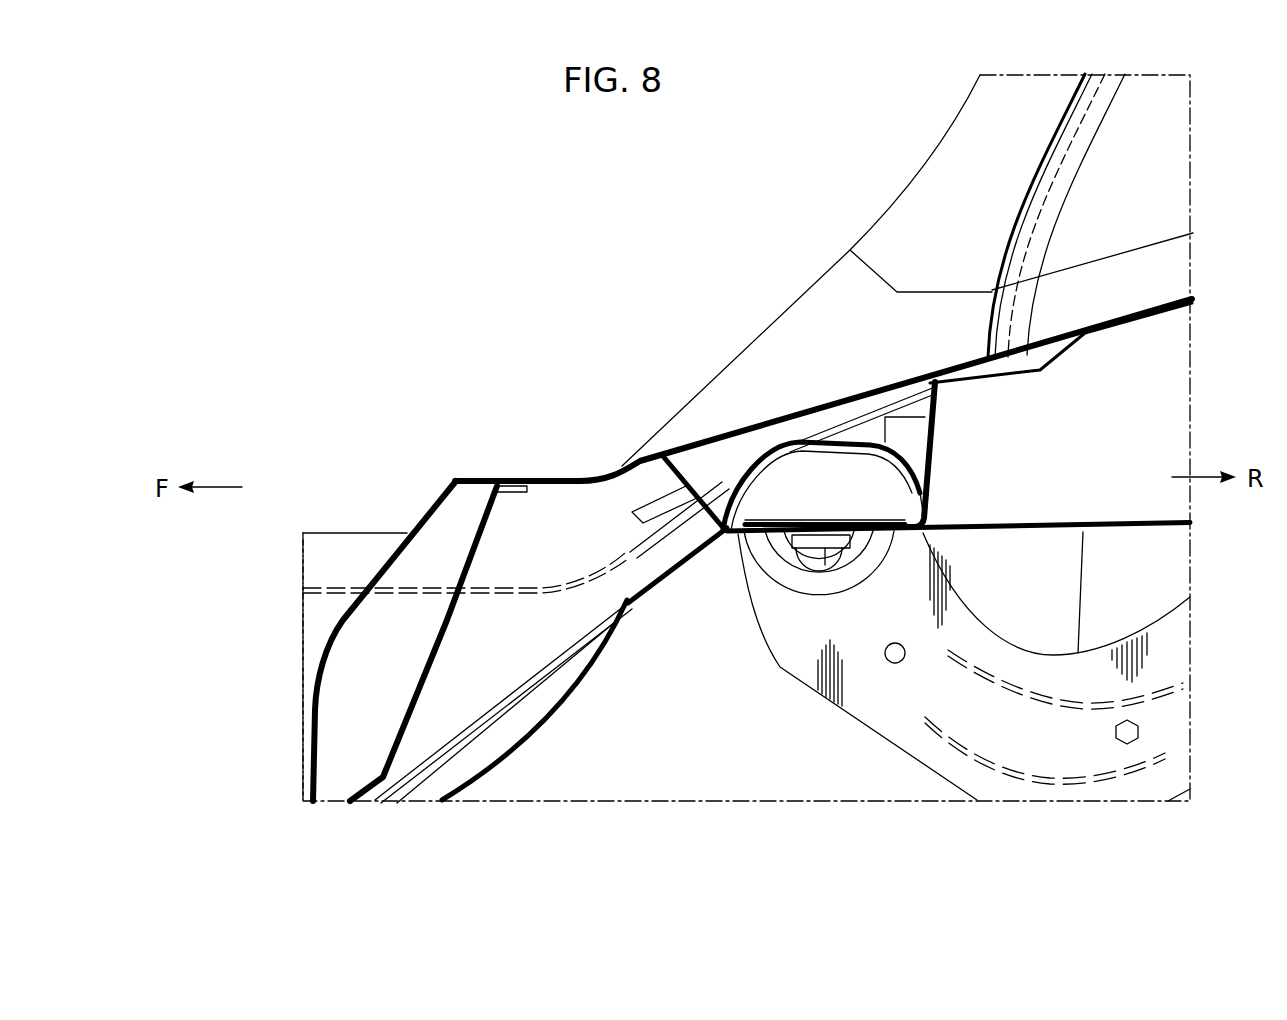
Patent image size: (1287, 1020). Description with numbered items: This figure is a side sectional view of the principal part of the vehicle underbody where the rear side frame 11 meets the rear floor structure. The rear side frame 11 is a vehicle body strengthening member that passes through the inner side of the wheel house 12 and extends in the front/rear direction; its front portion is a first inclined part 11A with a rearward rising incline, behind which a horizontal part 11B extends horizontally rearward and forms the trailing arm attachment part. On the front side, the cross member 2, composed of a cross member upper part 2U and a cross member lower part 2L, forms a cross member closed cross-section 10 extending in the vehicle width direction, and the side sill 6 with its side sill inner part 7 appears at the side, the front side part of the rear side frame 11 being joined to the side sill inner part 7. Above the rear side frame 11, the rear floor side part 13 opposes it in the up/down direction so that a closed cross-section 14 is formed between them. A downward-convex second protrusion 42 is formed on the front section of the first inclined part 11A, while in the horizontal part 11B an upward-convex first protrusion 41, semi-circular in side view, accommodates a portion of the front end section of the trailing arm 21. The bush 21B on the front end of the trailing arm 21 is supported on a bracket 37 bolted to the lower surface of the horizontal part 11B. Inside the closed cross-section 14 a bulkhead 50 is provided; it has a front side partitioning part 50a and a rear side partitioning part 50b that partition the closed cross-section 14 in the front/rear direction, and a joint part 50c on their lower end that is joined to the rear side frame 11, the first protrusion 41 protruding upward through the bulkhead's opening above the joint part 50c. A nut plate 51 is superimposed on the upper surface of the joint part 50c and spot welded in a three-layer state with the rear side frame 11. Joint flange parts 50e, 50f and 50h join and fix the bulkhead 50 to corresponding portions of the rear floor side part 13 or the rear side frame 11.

The No. 3 cross member 2 is at (420, 609).
The cross member upper part 2U is at (458, 478).
The cross member lower part 2L is at (427, 668).
The side sill 6 is at (323, 532).
The side sill inner part 7 is at (303, 655).
The cross member closed cross-section 10 is at (372, 708).
The rear side frame 11 is at (782, 663).
The first inclined part 11A is at (526, 688).
The horizontal part 11B is at (950, 533).
The wheel house 12 is at (1031, 178).
The rear floor side part 13 is at (713, 443).
The closed cross-section 14 is at (1090, 470).
The trailing arm 21 is at (1052, 746).
The bush 21B is at (786, 597).
The bracket 37 is at (830, 557).
The first protrusion 41 is at (830, 445).
The second protrusion 42 is at (470, 790).
The bulkhead 50 is at (864, 430).
The front side partitioning part 50a is at (677, 460).
The rear side partitioning part 50b is at (925, 467).
The joint part 50c is at (797, 520).
The joint flange part 50e is at (912, 427).
The joint flange part 50f is at (960, 385).
The joint flange part 50h is at (650, 500).
The nut plate 51 is at (858, 519).